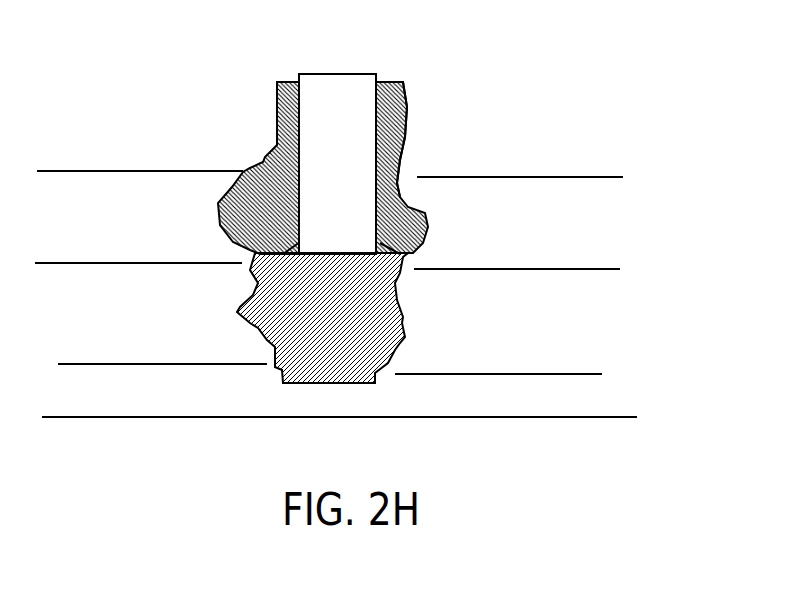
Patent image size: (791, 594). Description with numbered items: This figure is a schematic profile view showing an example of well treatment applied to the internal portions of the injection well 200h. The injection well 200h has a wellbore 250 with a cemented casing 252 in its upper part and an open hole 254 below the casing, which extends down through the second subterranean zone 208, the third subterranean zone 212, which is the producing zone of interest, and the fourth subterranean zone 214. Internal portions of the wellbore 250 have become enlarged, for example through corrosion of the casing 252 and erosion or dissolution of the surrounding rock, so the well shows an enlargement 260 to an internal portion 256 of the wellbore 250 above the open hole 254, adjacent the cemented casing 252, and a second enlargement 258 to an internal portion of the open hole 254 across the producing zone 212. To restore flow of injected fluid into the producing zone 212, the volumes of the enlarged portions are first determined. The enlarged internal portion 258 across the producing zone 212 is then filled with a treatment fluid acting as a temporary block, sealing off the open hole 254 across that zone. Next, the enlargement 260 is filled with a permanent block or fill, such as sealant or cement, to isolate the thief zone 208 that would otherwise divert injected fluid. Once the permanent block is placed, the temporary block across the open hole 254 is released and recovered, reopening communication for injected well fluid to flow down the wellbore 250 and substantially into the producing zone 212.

The injection well 200h is at (135, 108).
The second subterranean zone 208 is at (661, 235).
The third subterranean zone 212 is at (661, 330).
The fourth subterranean zone 214 is at (661, 406).
The wellbore 250 is at (395, 82).
The cemented casing 252 is at (300, 92).
The open hole 254 is at (393, 327).
The internal portion of the wellbore 256 is at (395, 185).
The enlargement to internal portion of the open hole 258 is at (298, 385).
The enlargement to internal portion of the wellbore 260 is at (232, 218).